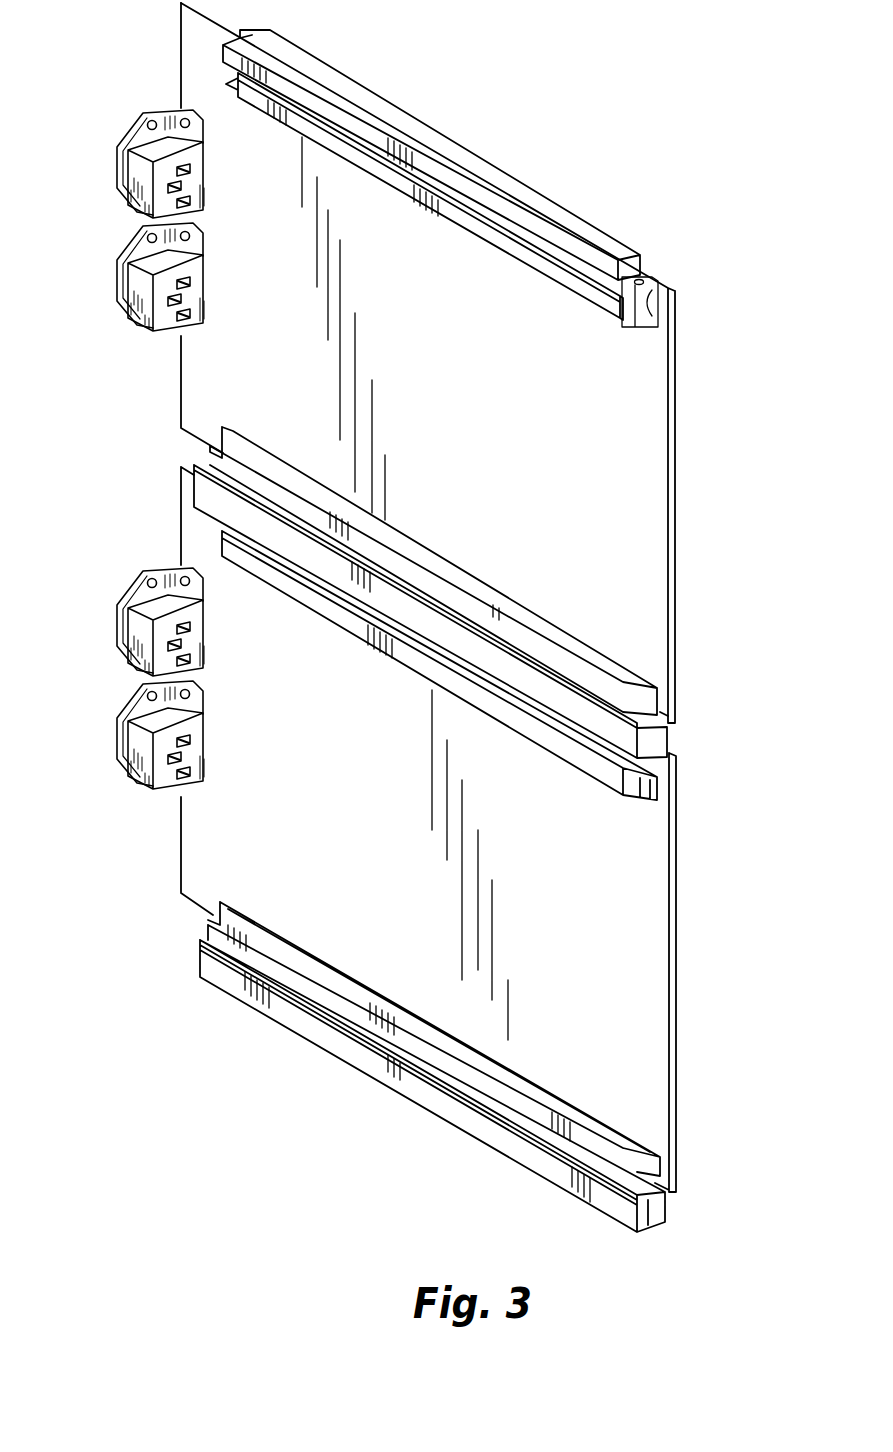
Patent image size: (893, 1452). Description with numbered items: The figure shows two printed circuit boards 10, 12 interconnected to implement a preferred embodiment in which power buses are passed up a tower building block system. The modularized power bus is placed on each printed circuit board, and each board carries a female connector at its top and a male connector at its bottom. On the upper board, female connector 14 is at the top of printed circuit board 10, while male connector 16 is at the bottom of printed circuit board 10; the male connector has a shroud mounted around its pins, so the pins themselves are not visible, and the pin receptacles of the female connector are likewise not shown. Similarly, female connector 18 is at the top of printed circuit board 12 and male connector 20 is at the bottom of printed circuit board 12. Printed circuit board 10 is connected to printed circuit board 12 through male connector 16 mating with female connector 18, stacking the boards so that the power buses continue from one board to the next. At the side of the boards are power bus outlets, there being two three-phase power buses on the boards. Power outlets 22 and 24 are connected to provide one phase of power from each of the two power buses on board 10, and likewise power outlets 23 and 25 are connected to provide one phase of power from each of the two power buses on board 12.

The printed circuit board 10 is at (627, 528).
The printed circuit board 12 is at (640, 1002).
The female connector 14 is at (603, 250).
The male connector 16 is at (650, 737).
The female connector 18 is at (657, 773).
The male connector 20 is at (663, 1220).
The power outlet 22 is at (121, 186).
The power outlet 23 is at (121, 622).
The power outlet 24 is at (121, 304).
The power outlet 25 is at (121, 738).